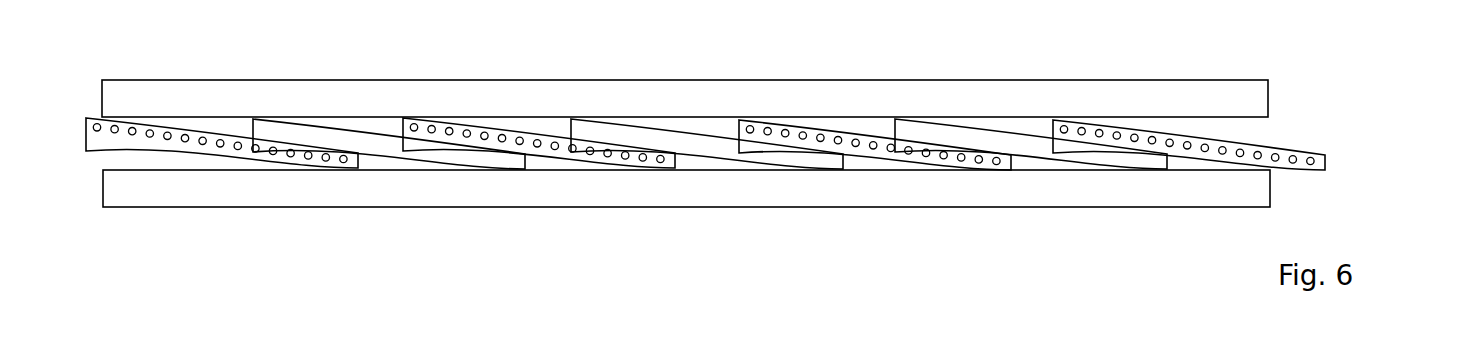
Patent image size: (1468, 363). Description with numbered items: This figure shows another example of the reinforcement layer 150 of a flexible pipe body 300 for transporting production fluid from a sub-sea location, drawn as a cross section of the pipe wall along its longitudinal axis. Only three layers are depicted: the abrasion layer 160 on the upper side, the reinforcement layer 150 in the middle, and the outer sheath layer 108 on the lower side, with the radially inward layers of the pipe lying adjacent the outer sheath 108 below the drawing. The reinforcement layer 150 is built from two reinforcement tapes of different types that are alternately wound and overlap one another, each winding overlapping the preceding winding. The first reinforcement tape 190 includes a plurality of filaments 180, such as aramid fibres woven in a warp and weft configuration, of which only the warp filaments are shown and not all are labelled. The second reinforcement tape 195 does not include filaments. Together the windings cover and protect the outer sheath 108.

The flexible pipe body 300 is at (1266, 50).
The abrasion layer 160 is at (1273, 97).
The outer sheath layer 108 is at (1273, 182).
The reinforcement layer 150 is at (1347, 140).
The first reinforcement tape 190 is at (223, 135).
The second reinforcement tape 195 is at (371, 134).
The filaments 180 is at (147, 128).